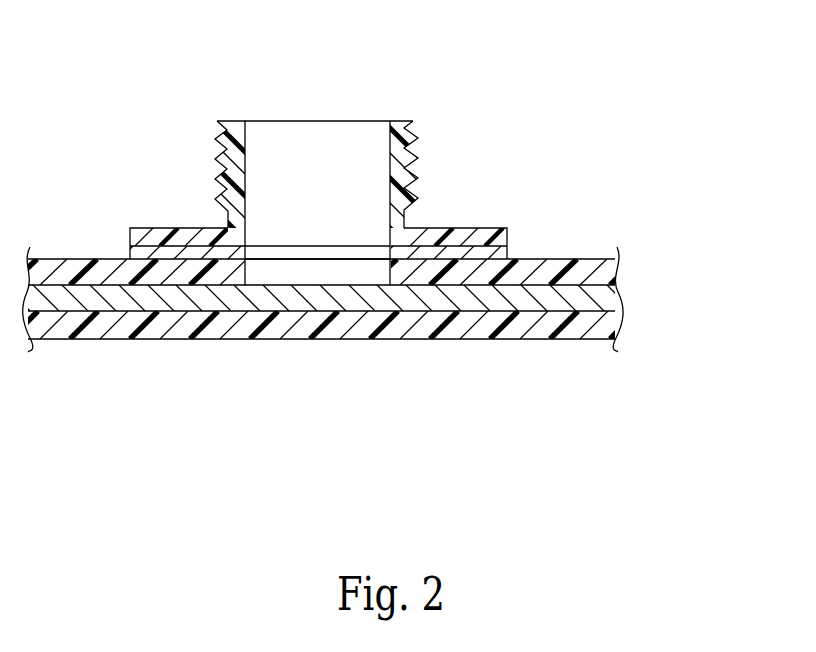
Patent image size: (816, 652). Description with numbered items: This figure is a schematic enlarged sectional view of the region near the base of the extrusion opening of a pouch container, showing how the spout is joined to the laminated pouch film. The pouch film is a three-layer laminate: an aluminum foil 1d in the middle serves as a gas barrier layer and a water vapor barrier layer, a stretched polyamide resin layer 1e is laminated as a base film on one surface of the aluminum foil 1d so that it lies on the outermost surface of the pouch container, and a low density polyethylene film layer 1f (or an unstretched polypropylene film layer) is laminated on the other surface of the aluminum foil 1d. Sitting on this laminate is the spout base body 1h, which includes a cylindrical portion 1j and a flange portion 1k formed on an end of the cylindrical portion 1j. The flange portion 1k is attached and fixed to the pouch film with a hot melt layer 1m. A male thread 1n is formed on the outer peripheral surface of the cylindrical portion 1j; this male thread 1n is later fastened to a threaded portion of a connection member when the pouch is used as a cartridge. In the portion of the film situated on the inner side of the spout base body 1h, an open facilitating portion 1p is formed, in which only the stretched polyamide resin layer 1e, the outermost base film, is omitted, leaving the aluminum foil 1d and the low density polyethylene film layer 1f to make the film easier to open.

The spout base body 1h is at (160, 182).
The cylindrical portion 1j is at (246, 166).
The open facilitating portion 1p is at (349, 268).
The male thread 1n is at (415, 162).
The flange portion 1k is at (497, 228).
The hot melt layer 1m is at (128, 255).
The stretched polyamide resin layer 1e is at (580, 260).
The aluminum foil 1d is at (614, 296).
The low density polyethylene film layer 1f is at (573, 342).